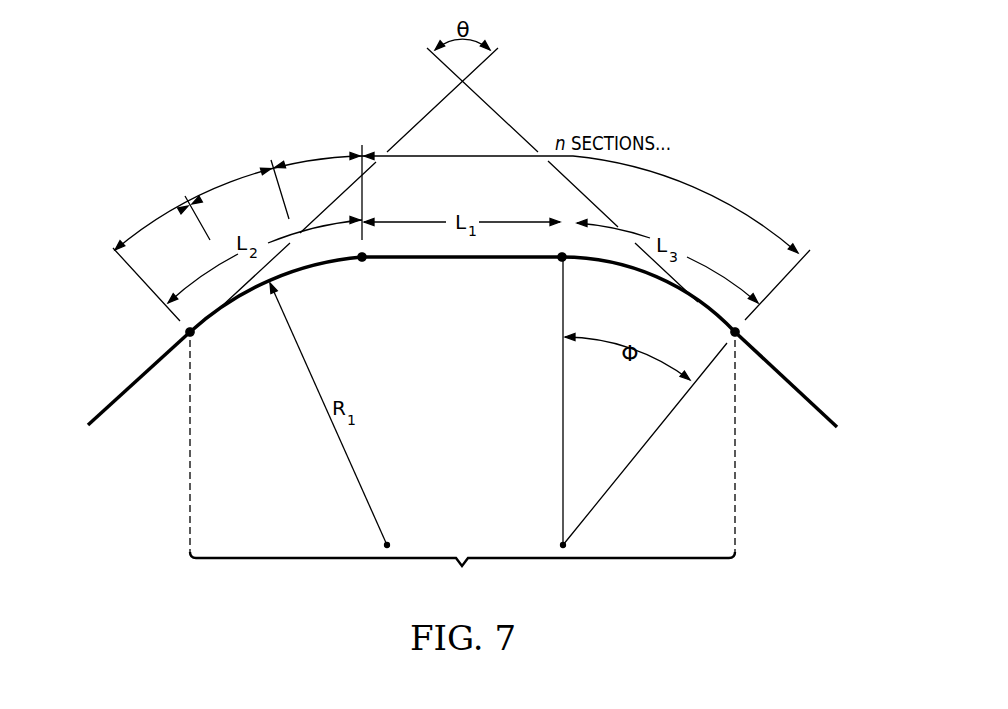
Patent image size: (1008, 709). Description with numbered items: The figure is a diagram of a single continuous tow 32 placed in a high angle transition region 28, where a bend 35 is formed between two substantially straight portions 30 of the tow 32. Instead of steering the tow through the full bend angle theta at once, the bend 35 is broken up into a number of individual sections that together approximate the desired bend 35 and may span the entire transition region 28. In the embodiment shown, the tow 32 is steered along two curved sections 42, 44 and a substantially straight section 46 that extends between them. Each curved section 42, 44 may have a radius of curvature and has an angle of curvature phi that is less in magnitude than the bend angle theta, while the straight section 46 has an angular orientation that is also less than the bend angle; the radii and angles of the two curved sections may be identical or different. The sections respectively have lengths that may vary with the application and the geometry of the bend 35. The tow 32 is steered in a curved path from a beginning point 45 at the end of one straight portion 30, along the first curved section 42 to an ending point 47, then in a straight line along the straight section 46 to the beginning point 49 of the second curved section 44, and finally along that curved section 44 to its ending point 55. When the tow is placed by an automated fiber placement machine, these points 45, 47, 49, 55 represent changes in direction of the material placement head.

The transition region 28 is at (462, 574).
The straight portions 30 is at (138, 378).
The tow 32 is at (117, 405).
The bend 35 is at (320, 138).
The curved section 42 is at (312, 268).
The curved section 44 is at (652, 278).
The beginning point 45 is at (174, 323).
The straight section 46 is at (462, 260).
The ending point 47 is at (371, 273).
The beginning point 49 is at (553, 273).
The ending point 55 is at (754, 322).